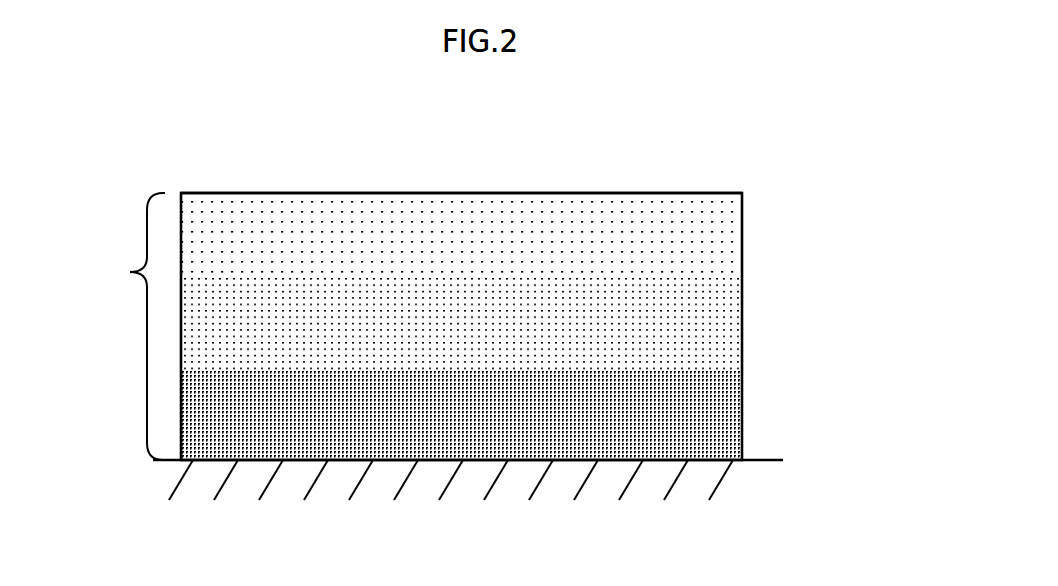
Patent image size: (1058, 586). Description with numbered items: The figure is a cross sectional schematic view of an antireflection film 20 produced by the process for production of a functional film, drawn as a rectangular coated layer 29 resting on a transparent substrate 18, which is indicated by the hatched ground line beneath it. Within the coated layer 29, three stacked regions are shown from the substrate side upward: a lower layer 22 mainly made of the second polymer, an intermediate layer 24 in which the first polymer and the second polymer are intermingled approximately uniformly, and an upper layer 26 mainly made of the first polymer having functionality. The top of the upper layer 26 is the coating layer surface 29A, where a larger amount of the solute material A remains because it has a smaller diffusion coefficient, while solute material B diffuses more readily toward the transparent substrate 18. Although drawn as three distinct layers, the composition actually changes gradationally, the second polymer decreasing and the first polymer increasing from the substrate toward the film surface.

The transparent substrate 18 is at (775, 460).
The antireflection film 20 is at (788, 219).
The lower layer 22 is at (733, 398).
The intermediate layer 24 is at (733, 323).
The upper layer 26 is at (682, 205).
The coated layer 29 is at (127, 326).
The coating layer surface 29A is at (523, 193).